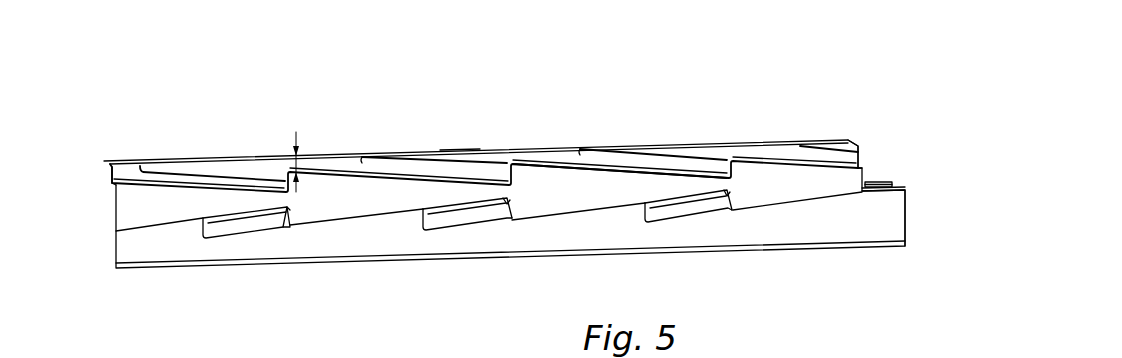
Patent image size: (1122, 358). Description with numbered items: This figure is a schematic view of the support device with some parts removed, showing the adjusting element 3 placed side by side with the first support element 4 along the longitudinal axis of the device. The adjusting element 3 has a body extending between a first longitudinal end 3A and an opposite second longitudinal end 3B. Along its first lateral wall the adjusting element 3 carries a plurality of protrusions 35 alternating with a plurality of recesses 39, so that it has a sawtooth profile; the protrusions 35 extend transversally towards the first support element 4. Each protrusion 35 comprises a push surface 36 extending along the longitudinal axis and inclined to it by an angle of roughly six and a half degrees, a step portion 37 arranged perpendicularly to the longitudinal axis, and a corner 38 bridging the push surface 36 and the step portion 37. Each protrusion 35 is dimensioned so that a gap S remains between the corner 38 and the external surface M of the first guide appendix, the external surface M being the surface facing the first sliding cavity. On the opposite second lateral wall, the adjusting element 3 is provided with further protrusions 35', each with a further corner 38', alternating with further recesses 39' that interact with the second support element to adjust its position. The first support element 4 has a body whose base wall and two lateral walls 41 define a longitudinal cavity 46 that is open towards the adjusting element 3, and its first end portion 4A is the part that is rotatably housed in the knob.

The adjusting element 3 is at (809, 90).
The first longitudinal end 3A is at (884, 149).
The second longitudinal end 3B is at (103, 152).
The first support element 4 is at (782, 272).
The first end portion 4A is at (893, 216).
The protrusion 35 is at (578, 255).
The further protrusion 35' is at (620, 128).
The push surface 36 is at (617, 194).
The step portion 37 is at (503, 204).
The corner 38 is at (467, 255).
The further corner 38' is at (318, 112).
The recess 39 is at (692, 263).
The further recess 39' is at (399, 142).
The lateral wall 41 is at (890, 181).
The longitudinal cavity 46 is at (904, 187).
The gap S is at (313, 155).
The external surface M is at (464, 152).